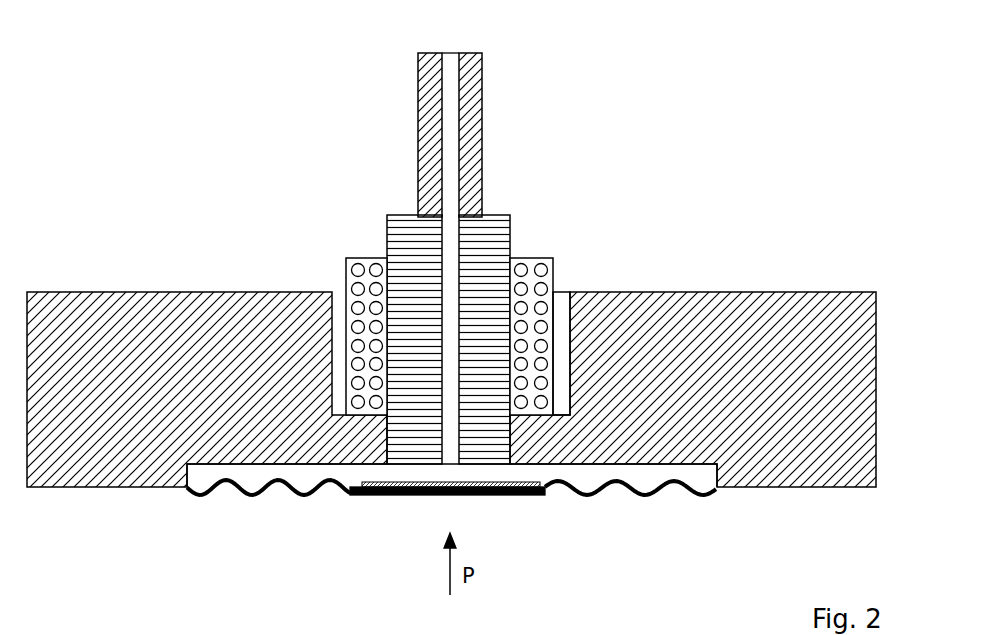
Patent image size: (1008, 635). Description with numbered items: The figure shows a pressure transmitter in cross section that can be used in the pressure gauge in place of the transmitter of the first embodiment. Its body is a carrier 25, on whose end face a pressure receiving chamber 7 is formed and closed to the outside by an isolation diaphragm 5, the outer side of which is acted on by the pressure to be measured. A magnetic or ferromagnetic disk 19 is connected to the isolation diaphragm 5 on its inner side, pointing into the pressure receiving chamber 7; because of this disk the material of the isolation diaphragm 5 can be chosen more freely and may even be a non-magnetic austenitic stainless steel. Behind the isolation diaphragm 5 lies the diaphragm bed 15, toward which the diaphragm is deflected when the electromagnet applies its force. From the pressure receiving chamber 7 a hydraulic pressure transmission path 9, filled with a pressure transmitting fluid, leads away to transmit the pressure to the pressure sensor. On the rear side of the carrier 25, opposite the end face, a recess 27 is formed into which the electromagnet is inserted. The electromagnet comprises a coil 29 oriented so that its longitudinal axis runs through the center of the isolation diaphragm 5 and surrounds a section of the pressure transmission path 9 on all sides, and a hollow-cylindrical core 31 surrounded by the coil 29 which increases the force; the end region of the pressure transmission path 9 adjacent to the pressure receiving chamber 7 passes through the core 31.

The carrier 25 is at (765, 322).
The hydraulic pressure transmission path 9 is at (452, 128).
The core 31 is at (482, 255).
The coil 29 is at (543, 287).
The recess 27 is at (562, 340).
The diaphragm bed 15 is at (343, 462).
The pressure receiving chamber 7 is at (617, 467).
The isolation diaphragm 5 is at (553, 492).
The magnetic or ferromagnetic disk 19 is at (473, 483).